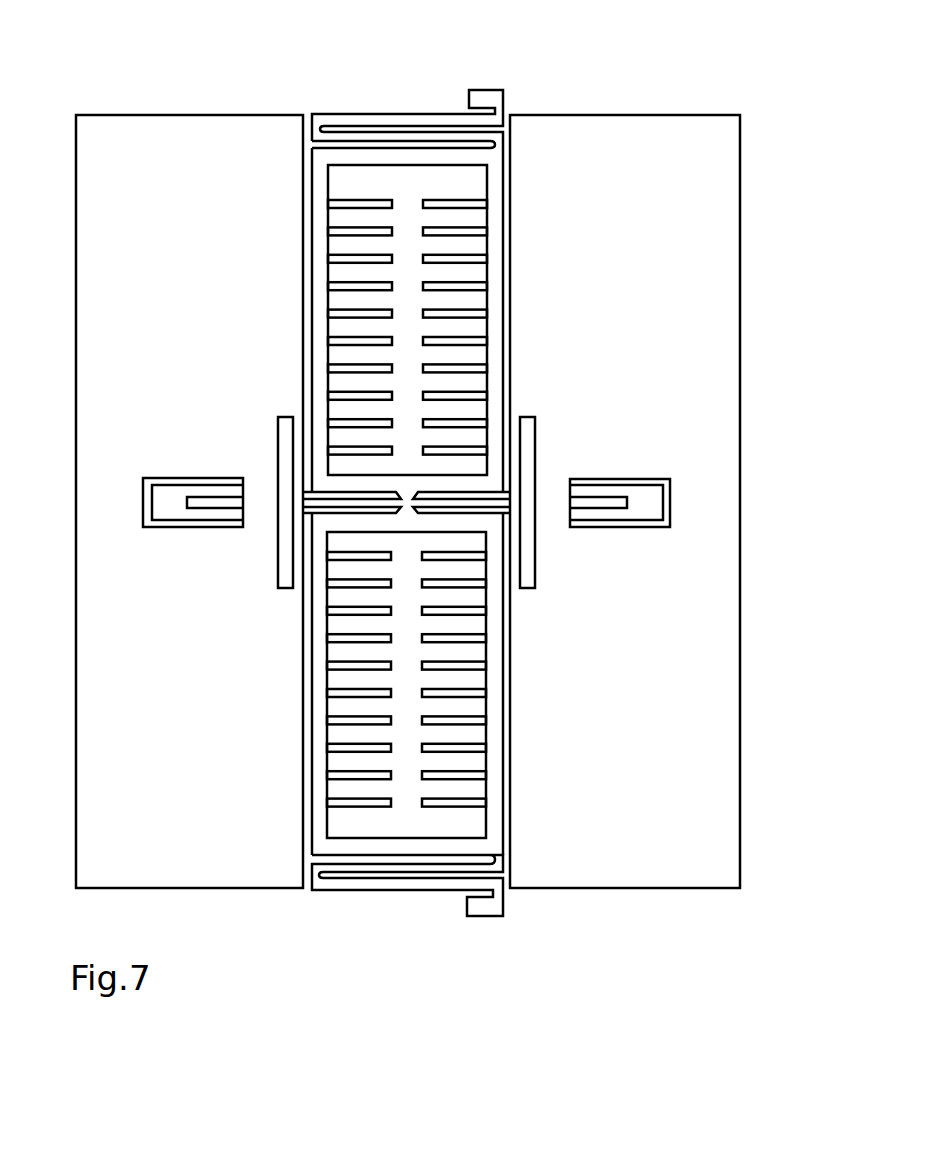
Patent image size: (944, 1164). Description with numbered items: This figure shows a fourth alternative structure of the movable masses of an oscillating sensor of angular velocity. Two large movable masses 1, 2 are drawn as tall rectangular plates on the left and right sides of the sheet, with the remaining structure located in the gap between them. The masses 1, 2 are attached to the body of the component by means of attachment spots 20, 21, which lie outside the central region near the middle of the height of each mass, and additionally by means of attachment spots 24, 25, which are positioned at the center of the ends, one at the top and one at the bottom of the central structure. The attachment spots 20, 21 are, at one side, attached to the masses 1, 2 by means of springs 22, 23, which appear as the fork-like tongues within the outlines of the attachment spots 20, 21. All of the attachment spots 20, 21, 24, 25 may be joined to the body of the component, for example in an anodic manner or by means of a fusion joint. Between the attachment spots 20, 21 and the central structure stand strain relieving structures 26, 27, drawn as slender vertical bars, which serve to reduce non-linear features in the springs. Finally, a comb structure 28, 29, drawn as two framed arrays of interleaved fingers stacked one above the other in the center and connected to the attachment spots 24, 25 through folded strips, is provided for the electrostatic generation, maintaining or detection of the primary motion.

The mass 1 is at (176, 115).
The mass 2 is at (740, 158).
The attachment spot 20 is at (167, 500).
The attachment spot 21 is at (640, 505).
The spring 22 is at (212, 502).
The spring 23 is at (587, 503).
The attachment spot 24 is at (485, 100).
The attachment spot 25 is at (485, 910).
The strain relieving structure 26 is at (285, 430).
The strain relieving structure 27 is at (532, 450).
The comb structure 28 is at (463, 287).
The comb structure 29 is at (453, 717).